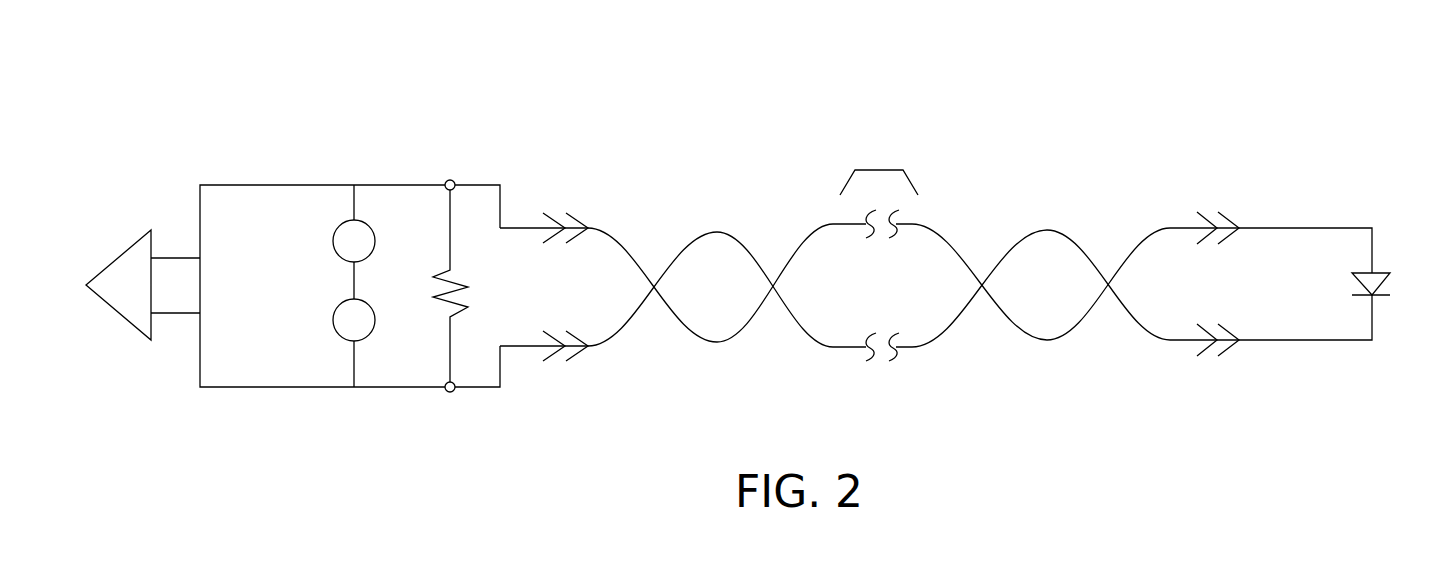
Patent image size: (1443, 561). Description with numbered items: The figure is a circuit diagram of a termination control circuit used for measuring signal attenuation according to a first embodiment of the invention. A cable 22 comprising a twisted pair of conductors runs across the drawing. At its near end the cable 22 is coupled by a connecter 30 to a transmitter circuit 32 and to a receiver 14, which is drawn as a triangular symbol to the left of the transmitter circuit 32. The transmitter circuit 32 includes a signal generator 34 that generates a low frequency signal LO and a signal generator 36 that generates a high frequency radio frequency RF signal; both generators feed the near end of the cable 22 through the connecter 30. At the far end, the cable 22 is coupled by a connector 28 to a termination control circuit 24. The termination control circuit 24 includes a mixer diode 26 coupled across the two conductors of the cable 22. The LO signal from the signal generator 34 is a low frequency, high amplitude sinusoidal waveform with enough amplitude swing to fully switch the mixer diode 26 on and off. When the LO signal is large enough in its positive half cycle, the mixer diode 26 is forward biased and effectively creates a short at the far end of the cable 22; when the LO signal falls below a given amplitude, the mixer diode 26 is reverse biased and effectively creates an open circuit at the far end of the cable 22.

The receiver 14 is at (118, 260).
The transmitter circuit 32 is at (401, 153).
The signal generator 34 is at (333, 241).
The signal generator 36 is at (333, 320).
The connecter 30 is at (575, 218).
The cable 22 is at (1043, 340).
The connector 28 is at (1232, 347).
The termination control circuit 24 is at (1304, 196).
The mixer diode 26 is at (1387, 283).